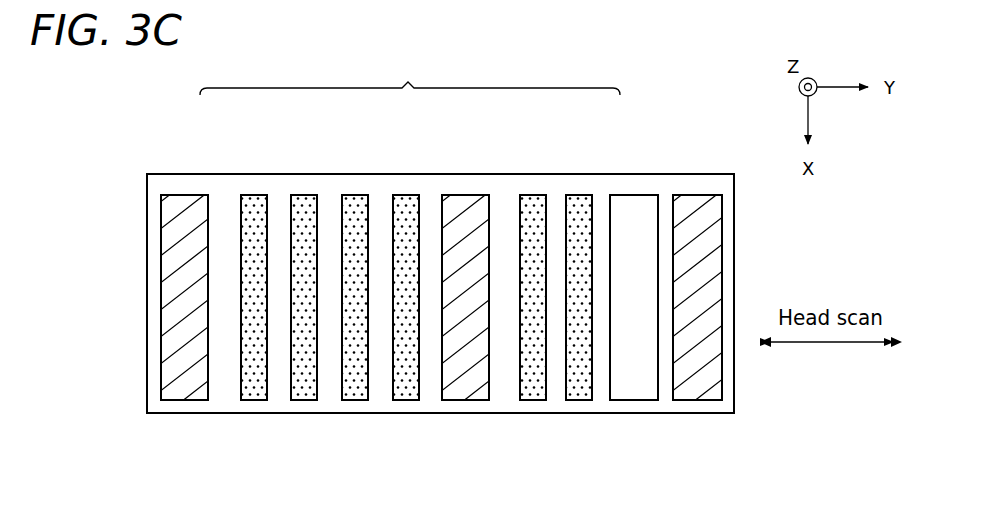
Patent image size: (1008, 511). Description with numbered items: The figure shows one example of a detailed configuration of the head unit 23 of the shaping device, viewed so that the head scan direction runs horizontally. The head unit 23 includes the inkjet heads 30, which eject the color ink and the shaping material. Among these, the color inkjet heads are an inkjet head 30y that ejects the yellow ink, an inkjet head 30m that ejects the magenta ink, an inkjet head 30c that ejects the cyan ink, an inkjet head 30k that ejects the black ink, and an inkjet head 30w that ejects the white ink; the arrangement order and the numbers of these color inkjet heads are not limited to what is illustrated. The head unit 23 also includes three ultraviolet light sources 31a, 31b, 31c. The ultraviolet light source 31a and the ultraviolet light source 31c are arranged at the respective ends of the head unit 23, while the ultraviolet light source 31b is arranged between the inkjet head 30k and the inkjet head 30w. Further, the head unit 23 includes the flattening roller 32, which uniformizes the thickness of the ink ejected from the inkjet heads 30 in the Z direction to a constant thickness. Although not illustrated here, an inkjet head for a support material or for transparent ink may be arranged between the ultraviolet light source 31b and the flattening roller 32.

The head unit 23 is at (137, 298).
The inkjet heads 30 is at (410, 75).
The inkjet head (yellow ink) 30y is at (255, 198).
The inkjet head (magenta ink) 30m is at (306, 198).
The inkjet head (cyan ink) 30c is at (356, 198).
The inkjet head (black ink) 30k is at (410, 198).
The inkjet head (white ink) 30w is at (535, 198).
The ultraviolet light source 31a is at (187, 198).
The ultraviolet light source 31b is at (466, 198).
The ultraviolet light source 31c is at (700, 198).
The flattening roller 32 is at (632, 198).